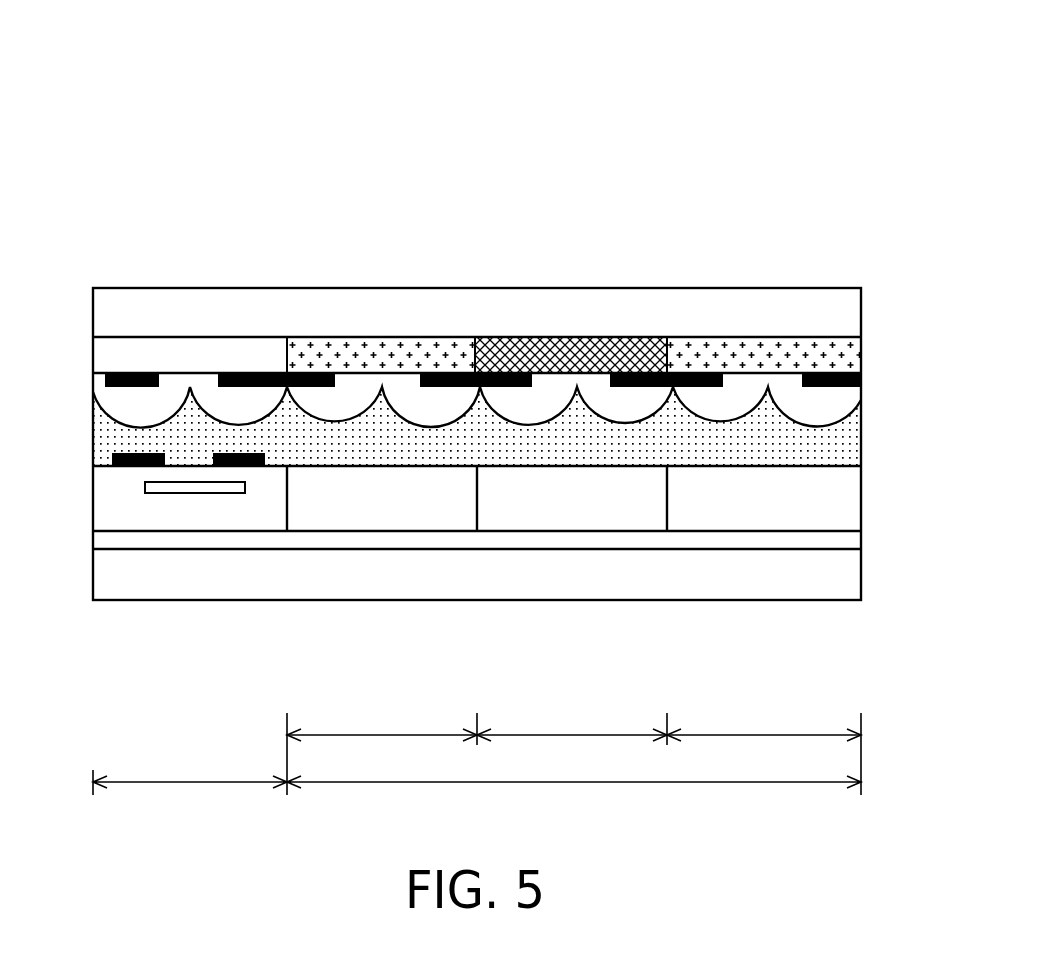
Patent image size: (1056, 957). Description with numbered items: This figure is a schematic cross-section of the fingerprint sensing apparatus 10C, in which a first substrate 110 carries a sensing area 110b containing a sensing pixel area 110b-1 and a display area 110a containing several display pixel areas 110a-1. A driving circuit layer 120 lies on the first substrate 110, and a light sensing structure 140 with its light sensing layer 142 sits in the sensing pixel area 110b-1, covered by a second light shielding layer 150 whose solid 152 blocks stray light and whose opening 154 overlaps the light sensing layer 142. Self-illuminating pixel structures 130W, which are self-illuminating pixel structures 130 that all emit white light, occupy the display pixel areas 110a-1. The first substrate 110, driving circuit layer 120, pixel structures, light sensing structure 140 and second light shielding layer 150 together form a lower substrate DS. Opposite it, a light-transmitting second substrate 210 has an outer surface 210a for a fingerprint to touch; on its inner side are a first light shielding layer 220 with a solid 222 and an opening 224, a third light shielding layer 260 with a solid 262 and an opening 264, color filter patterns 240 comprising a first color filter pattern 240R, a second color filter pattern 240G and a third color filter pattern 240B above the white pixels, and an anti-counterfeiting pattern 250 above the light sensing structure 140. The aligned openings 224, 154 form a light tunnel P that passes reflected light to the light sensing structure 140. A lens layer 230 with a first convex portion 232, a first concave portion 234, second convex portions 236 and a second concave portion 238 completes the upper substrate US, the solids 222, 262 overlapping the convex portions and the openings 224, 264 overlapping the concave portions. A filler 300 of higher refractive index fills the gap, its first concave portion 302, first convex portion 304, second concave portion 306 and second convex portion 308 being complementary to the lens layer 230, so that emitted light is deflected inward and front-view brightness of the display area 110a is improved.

The fingerprint sensing apparatus 10C is at (1034, 792).
The outer surface 210a is at (116, 274).
The second substrate 210 is at (851, 312).
The anti-counterfeiting pattern 250 is at (123, 350).
The color filter patterns 240 is at (574, 252).
The first color filter pattern 240R is at (422, 355).
The second color filter pattern 240G is at (577, 357).
The third color filter pattern 240B is at (727, 355).
The filler 300 is at (436, 364).
The first concave portion of the filler 302 is at (133, 436).
The first convex portion of the filler 304 is at (192, 412).
The second concave portion of the filler 306 is at (315, 435).
The second convex portion of the filler 308 is at (373, 425).
The lens layer 230 is at (436, 221).
The first convex portion 232 is at (128, 398).
The first concave portion 234 is at (192, 386).
The second convex portion 236 is at (330, 410).
The second concave portion 238 is at (378, 412).
The third light shielding layer 260 is at (527, 364).
The solid of the third light shielding layer 262 is at (300, 380).
The opening of the third light shielding layer 264 is at (406, 375).
The first light shielding layer 220 is at (222, 214).
The solid of the first light shielding layer 222 is at (117, 373).
The opening of the first light shielding layer 224 is at (172, 384).
The light tunnel P is at (95, 17).
The second light shielding layer 150 is at (144, 342).
The solid of the second light shielding layer 152 is at (118, 466).
The opening of the second light shielding layer 154 is at (181, 453).
The light sensing layer 142 is at (152, 489).
The light sensing structure 140 is at (193, 513).
The self-illuminating pixel structure 130 is at (561, 589).
The self-illuminating pixel structures emitting white light 130W is at (462, 520).
The driving circuit layer 120 is at (851, 540).
The first substrate 110 is at (851, 578).
The upper substrate US is at (974, 343).
The lower substrate DS is at (974, 513).
The display area 110a is at (574, 770).
The display pixel areas 110a-1 is at (574, 754).
The sensing area 110b is at (190, 817).
The sensing pixel areas 110b-1 is at (190, 799).